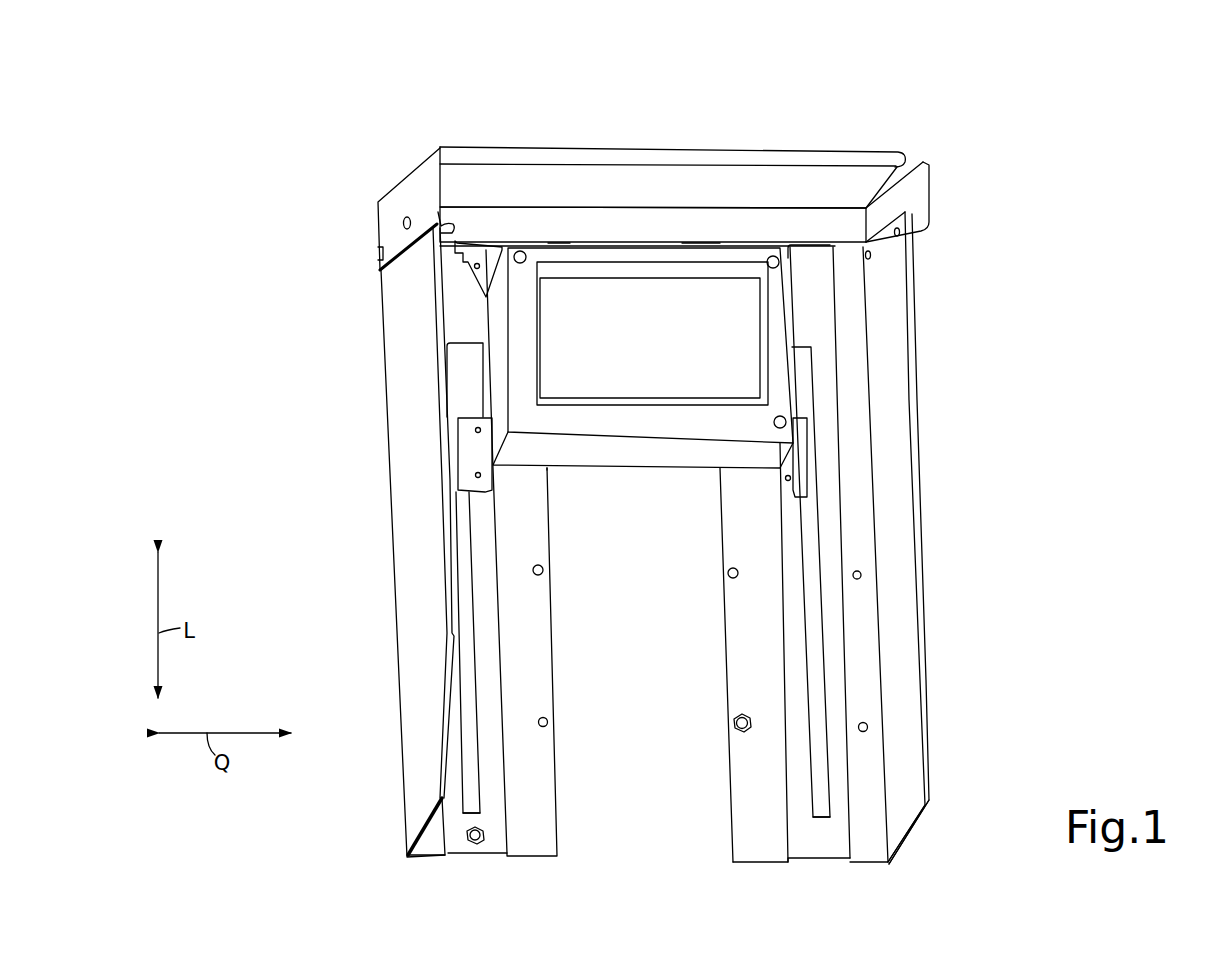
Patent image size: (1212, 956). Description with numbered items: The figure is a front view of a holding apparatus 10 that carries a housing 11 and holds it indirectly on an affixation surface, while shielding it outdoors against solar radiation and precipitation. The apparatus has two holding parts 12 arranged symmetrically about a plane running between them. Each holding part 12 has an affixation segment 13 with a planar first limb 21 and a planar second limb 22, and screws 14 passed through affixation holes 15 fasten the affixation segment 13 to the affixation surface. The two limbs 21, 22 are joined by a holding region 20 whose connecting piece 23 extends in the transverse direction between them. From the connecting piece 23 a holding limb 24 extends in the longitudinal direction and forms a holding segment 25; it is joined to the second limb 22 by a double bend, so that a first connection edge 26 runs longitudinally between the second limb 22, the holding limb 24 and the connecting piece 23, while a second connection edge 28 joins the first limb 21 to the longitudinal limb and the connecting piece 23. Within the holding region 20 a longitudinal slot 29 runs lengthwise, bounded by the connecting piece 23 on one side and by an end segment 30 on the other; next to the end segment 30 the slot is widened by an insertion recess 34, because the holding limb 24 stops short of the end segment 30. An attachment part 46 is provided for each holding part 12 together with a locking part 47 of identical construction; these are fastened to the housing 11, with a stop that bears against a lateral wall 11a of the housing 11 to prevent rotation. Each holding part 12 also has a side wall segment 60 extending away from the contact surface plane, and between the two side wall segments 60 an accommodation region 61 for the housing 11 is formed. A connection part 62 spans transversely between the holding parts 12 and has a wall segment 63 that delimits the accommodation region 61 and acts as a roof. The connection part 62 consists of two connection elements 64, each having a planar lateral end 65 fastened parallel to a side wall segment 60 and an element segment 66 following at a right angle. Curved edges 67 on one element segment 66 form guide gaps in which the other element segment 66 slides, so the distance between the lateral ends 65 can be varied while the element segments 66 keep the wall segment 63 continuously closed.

The holding apparatus 10 is at (1044, 141).
The housing 11 is at (780, 340).
The lateral wall 11a is at (500, 340).
The holding part 12 is at (307, 401).
The affixation segment 13 is at (430, 838).
The screw 14 is at (736, 725).
The affixation hole 15 is at (862, 574).
The holding region 20 is at (497, 822).
The first limb 21 is at (858, 630).
The second limb 22 is at (528, 647).
The connecting piece 23 is at (474, 846).
The holding limb 24 is at (480, 540).
The holding segment 25 is at (800, 743).
The first connection edge 26 is at (497, 558).
The second connection edge 28 is at (424, 832).
The longitudinal slot 29 is at (477, 717).
The end segment 30 is at (810, 285).
The insertion recess 34 is at (810, 370).
The attachment part 46 is at (493, 478).
The locking part 47 is at (490, 253).
The side wall segment 60 is at (418, 560).
The accommodation region 61 is at (844, 451).
The connection part 62 is at (944, 194).
The wall segment 63 is at (700, 139).
The connection element 64 is at (437, 142).
The lateral end 65 is at (930, 178).
The element segment 66 is at (727, 190).
The curved edge 67 is at (866, 150).